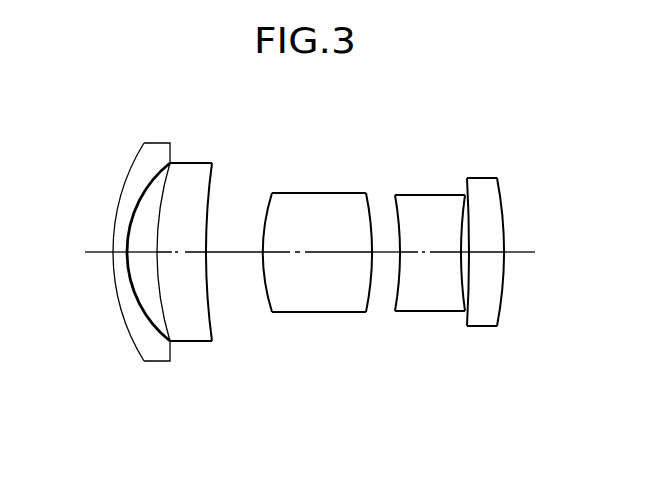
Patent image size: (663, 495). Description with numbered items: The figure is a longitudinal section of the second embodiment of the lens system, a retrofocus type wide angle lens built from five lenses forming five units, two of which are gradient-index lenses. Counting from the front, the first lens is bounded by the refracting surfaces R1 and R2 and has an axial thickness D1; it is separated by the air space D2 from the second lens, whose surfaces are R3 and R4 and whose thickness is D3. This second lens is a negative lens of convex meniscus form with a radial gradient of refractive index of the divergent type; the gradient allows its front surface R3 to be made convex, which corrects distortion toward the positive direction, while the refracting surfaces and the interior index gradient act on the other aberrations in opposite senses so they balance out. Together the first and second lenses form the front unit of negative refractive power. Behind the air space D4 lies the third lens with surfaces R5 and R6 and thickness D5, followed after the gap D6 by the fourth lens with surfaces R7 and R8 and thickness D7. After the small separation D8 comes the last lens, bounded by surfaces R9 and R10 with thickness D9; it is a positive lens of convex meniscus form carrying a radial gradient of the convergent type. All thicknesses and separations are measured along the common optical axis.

The first refracting surface R1 is at (131, 168).
The second refracting surface R2 is at (162, 171).
The third refracting surface R3 is at (164, 189).
The fourth refracting surface R4 is at (213, 170).
The fifth refracting surface R5 is at (270, 194).
The sixth refracting surface R6 is at (369, 195).
The seventh refracting surface R7 is at (394, 196).
The eighth refracting surface R8 is at (464, 196).
The ninth refracting surface R9 is at (467, 179).
The tenth refracting surface R10 is at (500, 190).
The first axial thickness D1 is at (120, 256).
The second axial separation D2 is at (148, 256).
The third axial thickness D3 is at (187, 256).
The fourth axial separation D4 is at (236, 256).
The fifth axial thickness D5 is at (322, 256).
The sixth axial separation D6 is at (388, 256).
The seventh axial thickness D7 is at (433, 256).
The eighth axial separation D8 is at (465, 256).
The ninth axial thickness D9 is at (485, 256).